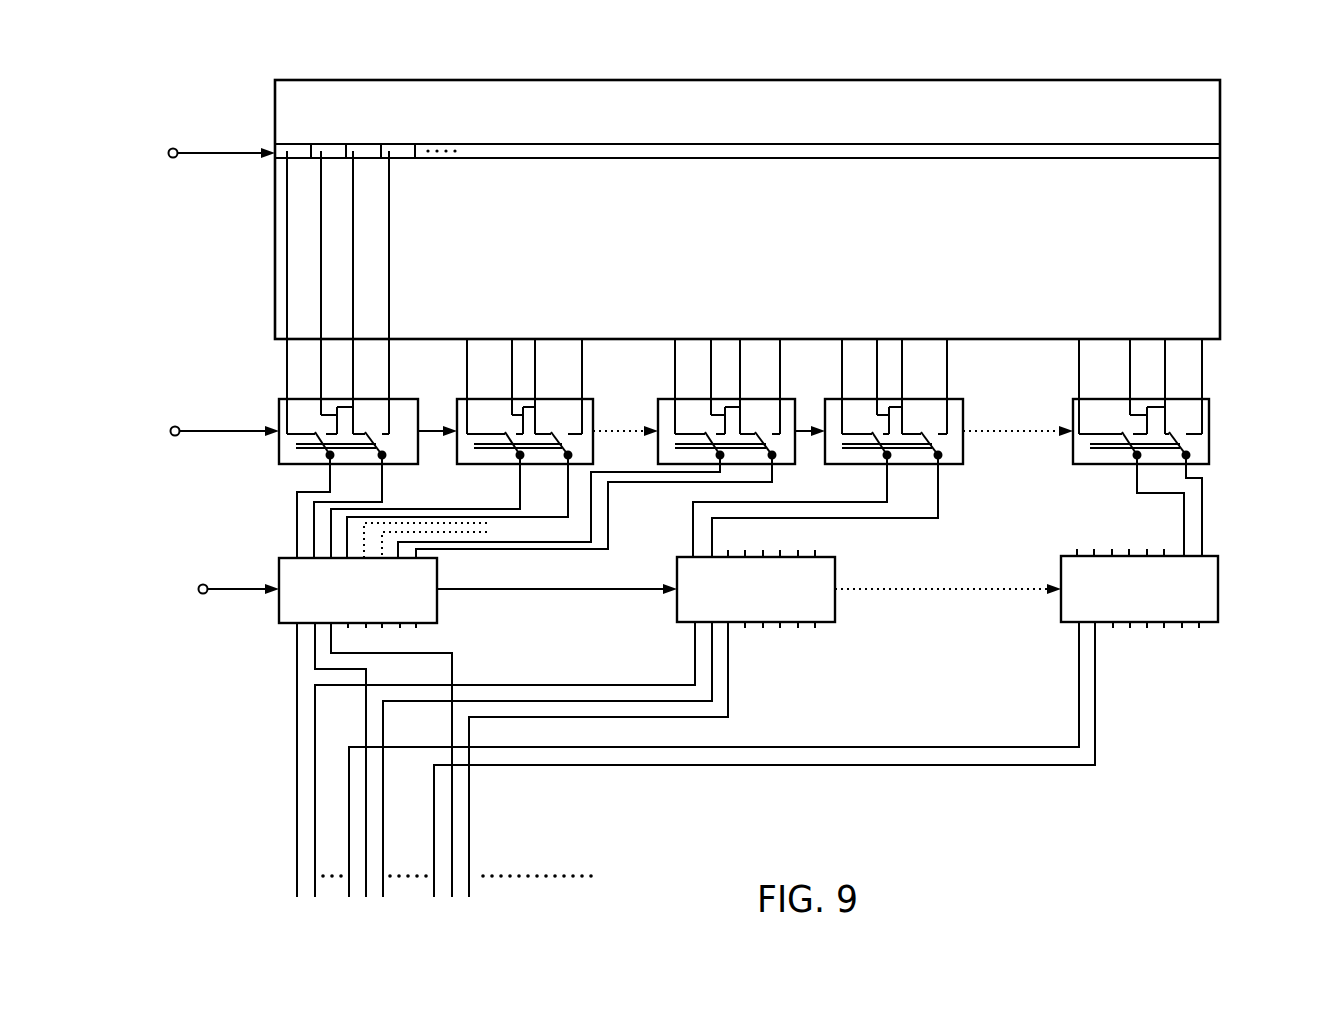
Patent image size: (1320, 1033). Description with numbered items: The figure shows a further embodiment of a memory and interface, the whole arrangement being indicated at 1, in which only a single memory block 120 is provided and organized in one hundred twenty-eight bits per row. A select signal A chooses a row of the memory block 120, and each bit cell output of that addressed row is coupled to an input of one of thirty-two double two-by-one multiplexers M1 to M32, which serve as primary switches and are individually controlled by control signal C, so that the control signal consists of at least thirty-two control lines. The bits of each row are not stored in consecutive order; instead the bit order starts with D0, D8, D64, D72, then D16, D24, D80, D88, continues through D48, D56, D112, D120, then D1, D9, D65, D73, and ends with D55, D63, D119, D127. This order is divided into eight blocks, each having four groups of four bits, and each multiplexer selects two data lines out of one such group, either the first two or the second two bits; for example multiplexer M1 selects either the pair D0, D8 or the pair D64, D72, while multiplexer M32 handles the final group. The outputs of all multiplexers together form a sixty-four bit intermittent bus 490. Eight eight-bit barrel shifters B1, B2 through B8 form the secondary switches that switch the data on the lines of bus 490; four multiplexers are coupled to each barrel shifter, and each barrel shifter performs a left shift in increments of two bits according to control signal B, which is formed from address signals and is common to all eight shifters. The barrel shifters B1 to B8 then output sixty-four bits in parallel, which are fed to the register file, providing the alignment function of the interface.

The semiconductor memory device 1 is at (733, 467).
The memory block 120 is at (1222, 212).
The intermittent bus 490 is at (1228, 506).
The multiplexer M1 is at (334, 309).
The multiplexer M32 is at (1160, 378).
The barrel shifter B1 is at (279, 605).
The barrel shifter B2 is at (677, 604).
The barrel shifter B8 is at (1220, 592).
The data bit D0 is at (287, 382).
The data bit D8 is at (321, 383).
The data bit D64 is at (355, 372).
The data bit D72 is at (390, 372).
The data bit D16 is at (467, 358).
The data bit D24 is at (512, 385).
The data bit D80 is at (555, 378).
The data bit D88 is at (608, 376).
The data bit D48 is at (675, 356).
The data bit D56 is at (710, 360).
The data bit D112 is at (739, 360).
The data bit D120 is at (781, 356).
The data bit D1 is at (842, 355).
The data bit D9 is at (877, 385).
The data bit D65 is at (914, 353).
The data bit D73 is at (948, 370).
The data bit D55 is at (1079, 388).
The data bit D63 is at (1130, 387).
The data bit D119 is at (1164, 360).
The data bit D127 is at (1202, 353).